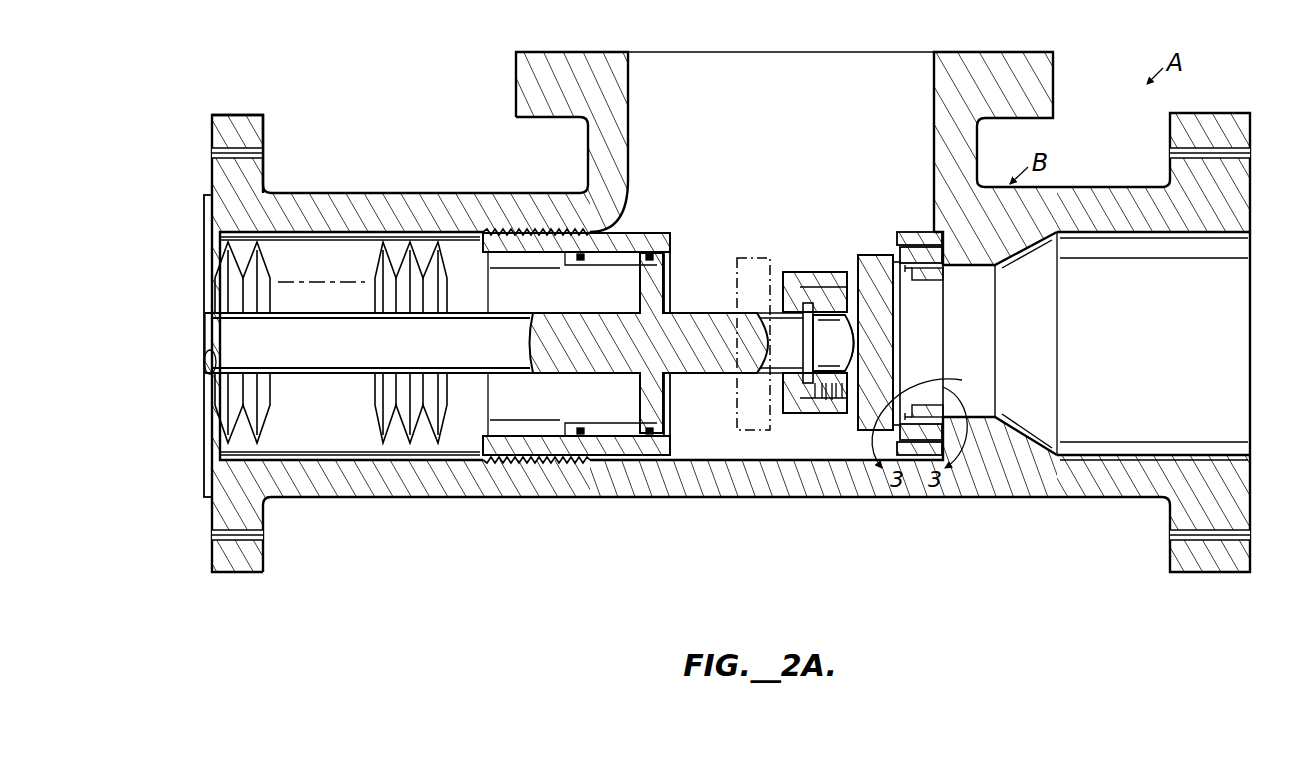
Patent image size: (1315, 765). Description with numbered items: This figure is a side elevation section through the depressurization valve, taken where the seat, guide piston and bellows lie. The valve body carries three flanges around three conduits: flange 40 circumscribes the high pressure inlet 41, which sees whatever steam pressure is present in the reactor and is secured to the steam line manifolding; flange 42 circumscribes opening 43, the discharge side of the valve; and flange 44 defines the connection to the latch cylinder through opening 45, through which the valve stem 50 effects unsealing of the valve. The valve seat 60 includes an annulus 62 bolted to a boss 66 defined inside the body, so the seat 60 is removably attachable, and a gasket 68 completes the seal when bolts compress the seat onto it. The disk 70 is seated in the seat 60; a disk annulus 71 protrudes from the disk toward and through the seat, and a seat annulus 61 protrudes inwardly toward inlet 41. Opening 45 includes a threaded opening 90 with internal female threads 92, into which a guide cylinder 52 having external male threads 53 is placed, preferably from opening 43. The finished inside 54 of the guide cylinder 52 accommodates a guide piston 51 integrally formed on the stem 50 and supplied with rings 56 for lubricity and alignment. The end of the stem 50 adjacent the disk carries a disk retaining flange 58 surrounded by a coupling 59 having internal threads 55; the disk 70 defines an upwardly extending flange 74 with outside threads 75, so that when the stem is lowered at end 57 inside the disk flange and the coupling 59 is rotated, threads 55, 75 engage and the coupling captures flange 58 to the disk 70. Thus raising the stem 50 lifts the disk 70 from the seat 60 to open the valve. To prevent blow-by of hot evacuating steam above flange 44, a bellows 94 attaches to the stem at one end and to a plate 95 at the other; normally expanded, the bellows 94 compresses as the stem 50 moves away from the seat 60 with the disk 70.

The flange 40 is at (1252, 190).
The high pressure inlet 41 is at (1194, 338).
The flange 42 is at (553, 52).
The opening 43 is at (765, 91).
The flange 44 is at (250, 115).
The opening 45 is at (307, 429).
The valve stem 50 is at (405, 358).
The guide piston 51 is at (664, 282).
The guide cylinder 52 is at (636, 233).
The external male threads 53 is at (567, 242).
The inside of guide cylinder 54 is at (522, 256).
The internal threads 55 is at (822, 399).
The rings 56 is at (650, 268).
The end 57 is at (856, 348).
The disk retaining flange 58 is at (808, 392).
The coupling 59 is at (790, 262).
The valve seat 60 is at (902, 229).
The seat annulus 61 is at (936, 300).
The annulus 62 is at (920, 232).
The boss 66 is at (972, 265).
The gasket 68 is at (945, 268).
The disk 70 is at (856, 268).
The disk annulus 71 is at (930, 315).
The upwardly extending flange 74 is at (830, 402).
The outside threads 75 is at (840, 400).
The threaded opening 90 is at (486, 226).
The internal female threads 92 is at (497, 232).
The bellows 94 is at (366, 262).
The plate 95 is at (206, 212).